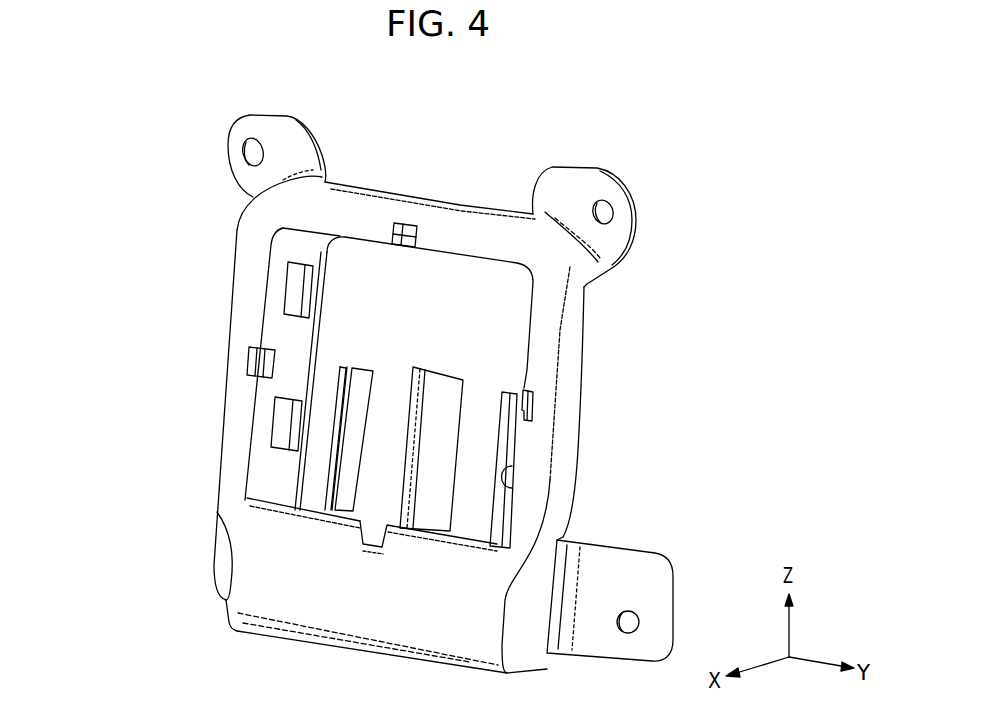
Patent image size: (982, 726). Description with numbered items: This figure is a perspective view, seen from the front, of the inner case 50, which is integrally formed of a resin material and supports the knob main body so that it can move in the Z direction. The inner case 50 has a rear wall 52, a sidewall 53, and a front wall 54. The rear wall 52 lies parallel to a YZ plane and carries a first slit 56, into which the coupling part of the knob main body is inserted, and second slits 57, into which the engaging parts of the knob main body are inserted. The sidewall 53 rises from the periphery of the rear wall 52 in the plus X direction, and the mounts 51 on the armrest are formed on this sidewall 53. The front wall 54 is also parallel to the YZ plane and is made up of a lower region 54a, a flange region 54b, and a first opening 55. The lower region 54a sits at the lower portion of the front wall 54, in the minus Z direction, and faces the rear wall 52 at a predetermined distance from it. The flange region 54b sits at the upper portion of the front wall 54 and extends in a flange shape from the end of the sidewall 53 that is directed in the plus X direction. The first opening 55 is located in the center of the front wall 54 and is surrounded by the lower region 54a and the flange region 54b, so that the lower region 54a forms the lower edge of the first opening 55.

The inner case 50 is at (460, 160).
The mounts 51 is at (320, 143).
The rear wall 52 is at (384, 275).
The sidewall 53 is at (290, 336).
The front wall 54 is at (399, 420).
The lower region 54a is at (268, 565).
The flange region 54b is at (533, 508).
The first opening 55 is at (502, 468).
The first slit 56 is at (511, 401).
The second slits 57 is at (507, 424).